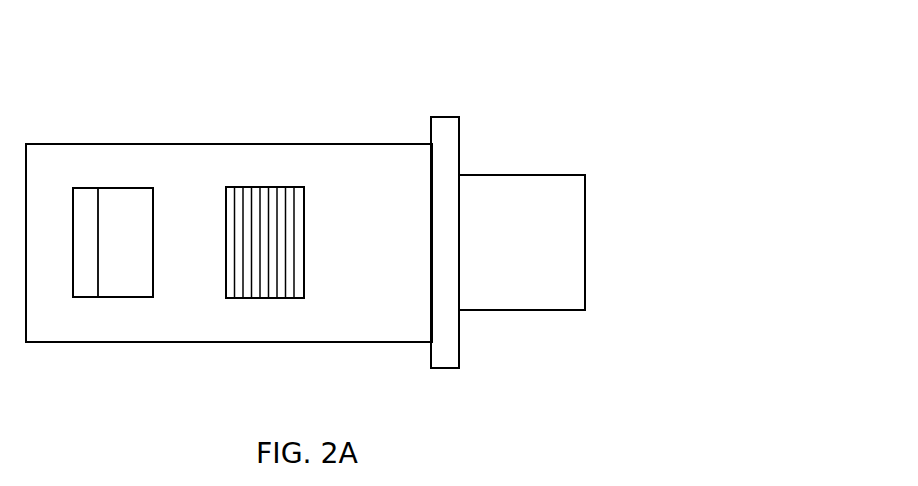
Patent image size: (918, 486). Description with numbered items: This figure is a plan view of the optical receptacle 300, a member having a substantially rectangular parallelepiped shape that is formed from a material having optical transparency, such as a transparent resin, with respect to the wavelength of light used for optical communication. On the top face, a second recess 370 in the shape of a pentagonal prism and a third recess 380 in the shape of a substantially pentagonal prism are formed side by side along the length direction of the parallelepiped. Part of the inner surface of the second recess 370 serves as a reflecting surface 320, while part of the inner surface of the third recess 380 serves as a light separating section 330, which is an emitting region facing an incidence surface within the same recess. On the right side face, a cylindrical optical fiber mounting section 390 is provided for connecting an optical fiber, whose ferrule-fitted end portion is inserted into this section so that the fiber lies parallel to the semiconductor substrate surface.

The optical receptacle 300 is at (563, 48).
The reflecting surface 320 is at (121, 292).
The light separating section 330 is at (264, 290).
The second recess 370 is at (114, 176).
The third recess 380 is at (267, 176).
The optical fiber mounting section 390 is at (515, 295).